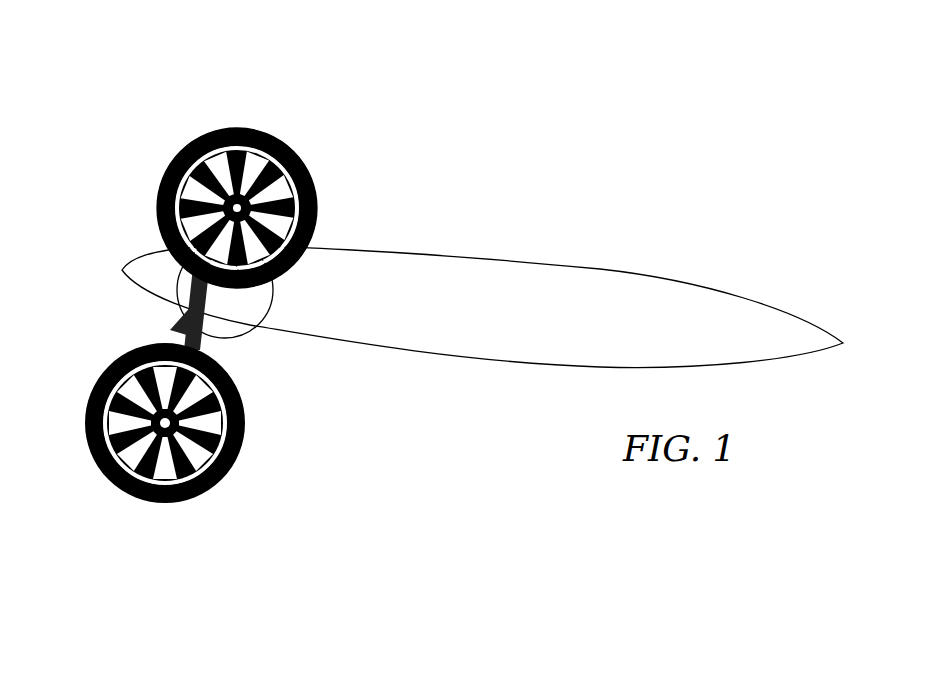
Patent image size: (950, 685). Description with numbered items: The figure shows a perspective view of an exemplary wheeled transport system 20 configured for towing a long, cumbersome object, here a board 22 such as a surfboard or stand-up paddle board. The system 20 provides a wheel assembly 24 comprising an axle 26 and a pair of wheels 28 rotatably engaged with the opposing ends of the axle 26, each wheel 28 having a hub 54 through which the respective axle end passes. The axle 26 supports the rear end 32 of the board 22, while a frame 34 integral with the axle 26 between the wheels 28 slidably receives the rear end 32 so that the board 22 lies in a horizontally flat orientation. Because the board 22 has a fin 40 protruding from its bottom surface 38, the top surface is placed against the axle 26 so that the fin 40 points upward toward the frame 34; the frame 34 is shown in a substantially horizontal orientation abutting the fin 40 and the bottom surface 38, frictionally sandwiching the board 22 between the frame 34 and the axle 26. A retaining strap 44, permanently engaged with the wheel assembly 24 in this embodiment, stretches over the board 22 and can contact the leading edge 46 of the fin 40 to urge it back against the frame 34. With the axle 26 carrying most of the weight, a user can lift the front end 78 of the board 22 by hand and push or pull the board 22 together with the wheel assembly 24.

The wheeled transport system 20 is at (98, 80).
The board 22 is at (537, 243).
The wheel assembly 24 is at (326, 165).
The axle 26 is at (180, 333).
The wheel 28 is at (255, 129).
The rear end 32 is at (150, 258).
The frame 34 is at (170, 275).
The bottom surface 38 is at (447, 317).
The fin 40 is at (252, 278).
The retaining strap 44 is at (250, 333).
The leading edge 46 is at (308, 243).
The hub 54 is at (168, 427).
The front end 78 is at (835, 342).